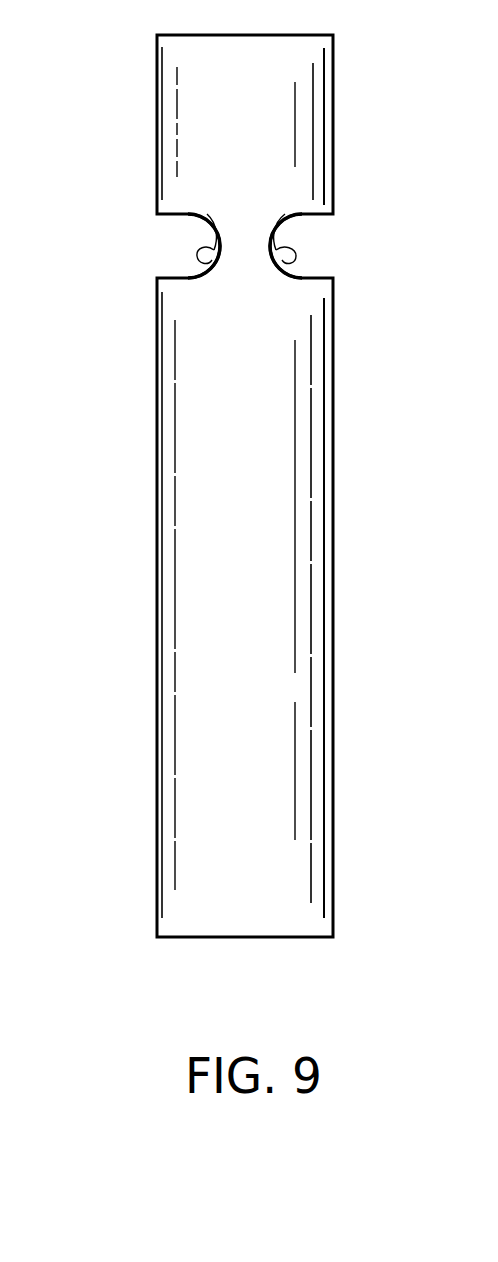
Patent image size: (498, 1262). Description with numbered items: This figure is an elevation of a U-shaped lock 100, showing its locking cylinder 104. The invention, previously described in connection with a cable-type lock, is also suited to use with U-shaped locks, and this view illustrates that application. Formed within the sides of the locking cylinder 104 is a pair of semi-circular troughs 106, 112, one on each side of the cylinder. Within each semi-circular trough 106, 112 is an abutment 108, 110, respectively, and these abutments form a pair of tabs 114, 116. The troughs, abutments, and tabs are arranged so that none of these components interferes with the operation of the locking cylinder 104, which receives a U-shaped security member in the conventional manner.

The U-shaped lock 100 is at (128, 132).
The locking cylinder 104 is at (156, 677).
The semi-circular trough 106 is at (165, 246).
The semi-circular trough 112 is at (327, 250).
The abutment 108 is at (203, 262).
The abutment 110 is at (286, 262).
The tab 114 is at (207, 214).
The tab 116 is at (279, 216).